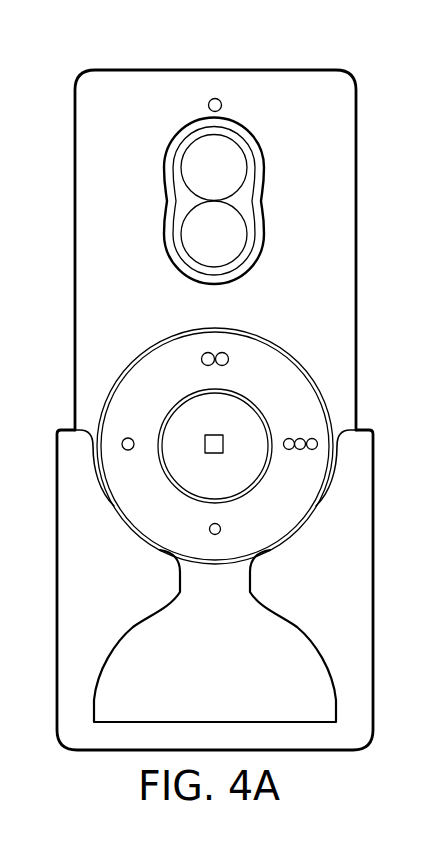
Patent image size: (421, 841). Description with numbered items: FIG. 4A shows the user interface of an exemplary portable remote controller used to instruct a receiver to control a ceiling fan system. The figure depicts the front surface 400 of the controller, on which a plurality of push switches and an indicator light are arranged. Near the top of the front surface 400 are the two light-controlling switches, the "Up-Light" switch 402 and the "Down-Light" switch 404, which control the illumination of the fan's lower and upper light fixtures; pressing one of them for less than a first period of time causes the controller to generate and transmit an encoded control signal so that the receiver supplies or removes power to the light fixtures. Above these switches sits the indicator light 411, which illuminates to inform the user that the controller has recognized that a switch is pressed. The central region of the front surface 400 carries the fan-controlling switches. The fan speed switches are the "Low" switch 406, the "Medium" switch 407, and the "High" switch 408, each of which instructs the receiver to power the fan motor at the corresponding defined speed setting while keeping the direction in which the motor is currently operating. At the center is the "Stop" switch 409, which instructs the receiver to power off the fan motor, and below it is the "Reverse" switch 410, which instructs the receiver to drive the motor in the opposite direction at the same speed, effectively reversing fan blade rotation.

The front surface 400 is at (95, 70).
The "Up-Light" switch 402 is at (193, 162).
The "Down-Light" switch 404 is at (226, 252).
The "Low" switch 406 is at (130, 437).
The "Medium" switch 407 is at (201, 359).
The "High" switch 408 is at (297, 438).
The "Stop" switch 409 is at (210, 455).
The "Reverse" switch 410 is at (218, 535).
The indicator light 411 is at (222, 106).